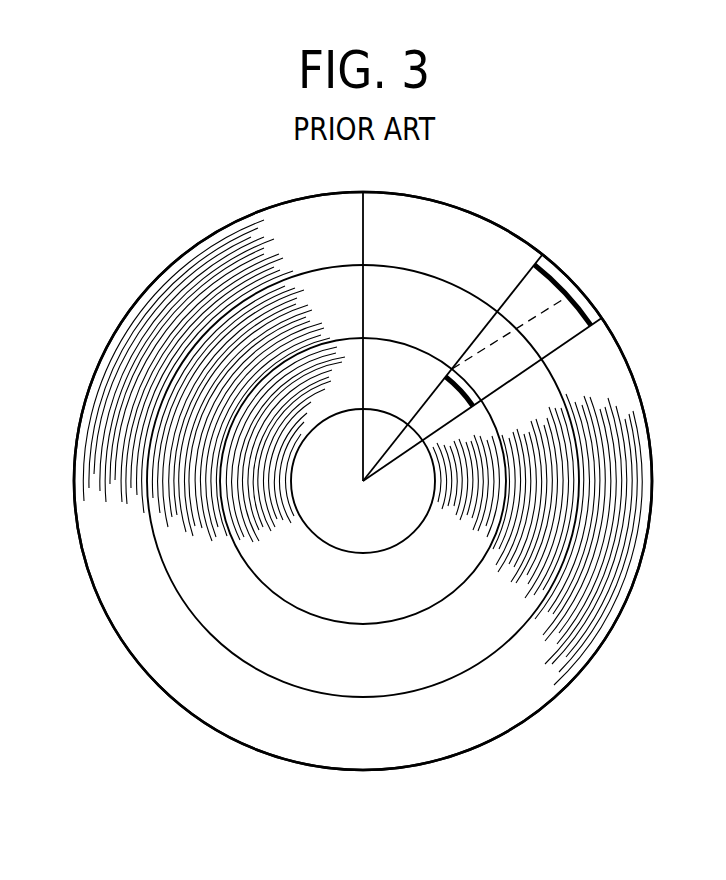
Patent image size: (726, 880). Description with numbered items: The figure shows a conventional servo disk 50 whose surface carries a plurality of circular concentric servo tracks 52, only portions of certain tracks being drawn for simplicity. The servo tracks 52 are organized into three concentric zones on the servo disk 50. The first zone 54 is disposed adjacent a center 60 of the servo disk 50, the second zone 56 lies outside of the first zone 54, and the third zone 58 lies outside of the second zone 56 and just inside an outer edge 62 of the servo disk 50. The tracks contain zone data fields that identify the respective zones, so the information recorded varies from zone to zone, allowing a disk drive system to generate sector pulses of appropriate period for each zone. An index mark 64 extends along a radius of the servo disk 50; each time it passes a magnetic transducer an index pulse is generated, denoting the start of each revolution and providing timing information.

The servo disk 50 is at (203, 727).
The servo tracks 52 is at (637, 420).
The first zone 54 is at (485, 539).
The second zone 56 is at (519, 611).
The third zone 58 is at (556, 676).
The center 60 is at (363, 481).
The outer edge 62 is at (587, 663).
The index mark 64 is at (365, 241).